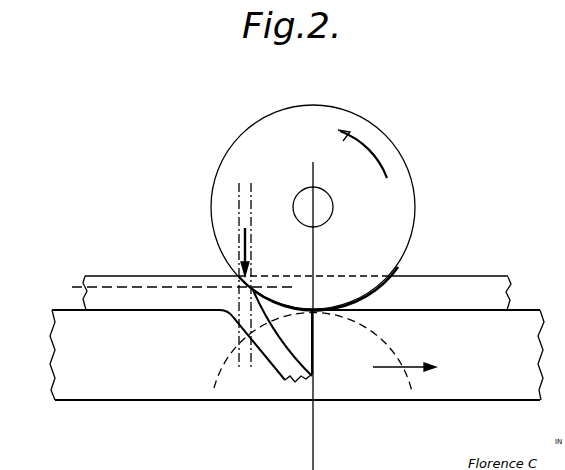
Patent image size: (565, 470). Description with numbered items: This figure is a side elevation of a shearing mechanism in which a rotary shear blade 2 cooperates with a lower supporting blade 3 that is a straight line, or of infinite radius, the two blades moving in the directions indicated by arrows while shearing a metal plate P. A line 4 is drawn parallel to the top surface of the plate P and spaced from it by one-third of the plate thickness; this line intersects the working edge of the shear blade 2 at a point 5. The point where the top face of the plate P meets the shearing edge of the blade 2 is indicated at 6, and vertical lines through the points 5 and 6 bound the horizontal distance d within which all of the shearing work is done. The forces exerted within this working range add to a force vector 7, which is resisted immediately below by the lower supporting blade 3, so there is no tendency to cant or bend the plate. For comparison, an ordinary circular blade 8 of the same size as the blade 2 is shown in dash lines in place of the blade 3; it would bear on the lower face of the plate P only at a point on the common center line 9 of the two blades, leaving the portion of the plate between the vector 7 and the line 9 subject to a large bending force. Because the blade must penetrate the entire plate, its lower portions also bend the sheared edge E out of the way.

The rotary shear blade 2 is at (410, 164).
The lower supporting blade 3 is at (297, 355).
The line parallel to the top surface of the plate 4 is at (75, 286).
The point of intersection 5 is at (252, 288).
The point of intersection 6 is at (240, 277).
The force vector 7 is at (243, 235).
The ordinary circular blade 8 is at (392, 350).
The common center line 9 is at (313, 453).
The distance d is at (266, 196).
The metal plate P is at (318, 285).
The sheared edge E is at (288, 378).